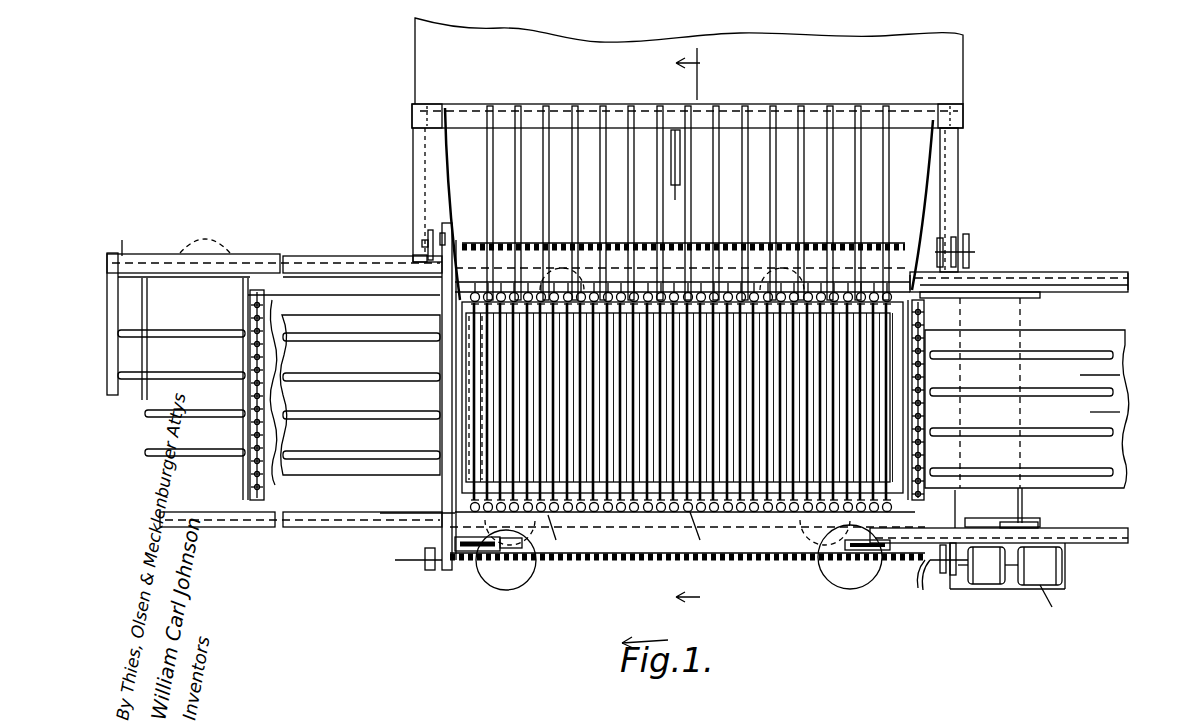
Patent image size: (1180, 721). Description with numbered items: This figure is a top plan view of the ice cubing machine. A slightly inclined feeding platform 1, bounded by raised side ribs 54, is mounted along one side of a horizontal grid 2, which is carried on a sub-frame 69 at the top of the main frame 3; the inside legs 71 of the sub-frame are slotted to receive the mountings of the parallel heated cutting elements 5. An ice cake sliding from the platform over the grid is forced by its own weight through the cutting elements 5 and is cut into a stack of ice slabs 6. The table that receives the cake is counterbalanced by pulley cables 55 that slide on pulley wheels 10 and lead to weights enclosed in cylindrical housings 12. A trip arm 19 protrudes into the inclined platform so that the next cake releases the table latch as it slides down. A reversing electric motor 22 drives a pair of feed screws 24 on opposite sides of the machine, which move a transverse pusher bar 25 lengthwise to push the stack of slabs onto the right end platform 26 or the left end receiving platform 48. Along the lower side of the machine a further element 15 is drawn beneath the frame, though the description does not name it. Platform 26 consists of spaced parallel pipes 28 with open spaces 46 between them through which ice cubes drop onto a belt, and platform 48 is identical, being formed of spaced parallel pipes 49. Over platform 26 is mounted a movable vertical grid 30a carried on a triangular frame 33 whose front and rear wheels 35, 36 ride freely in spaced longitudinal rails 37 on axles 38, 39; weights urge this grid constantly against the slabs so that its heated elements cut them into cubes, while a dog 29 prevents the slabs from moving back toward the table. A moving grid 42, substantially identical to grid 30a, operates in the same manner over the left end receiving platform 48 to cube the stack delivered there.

The feeding platform 1 is at (905, 122).
The horizontal grid 2 is at (722, 400).
The main frame 3 is at (428, 240).
The heated cutting elements 5 is at (512, 512).
The ice slabs 6 is at (676, 67).
The pulley wheels 10 is at (510, 560).
The cylindrical housing 12 is at (508, 590).
The drive chain 15 is at (640, 560).
The trip arm 19 is at (676, 128).
The electric motor 22 is at (1062, 568).
The feed screws 24 is at (470, 243).
The pusher bar 25 is at (442, 570).
The right end platform 26 is at (1128, 322).
The parallel pipes 28 is at (1090, 354).
The dog 29 is at (452, 160).
The vertical grid 30a is at (925, 318).
The triangular frame 33 is at (995, 253).
The front wheels 35 is at (982, 600).
The rear wheels 36 is at (1048, 527).
The longitudinal rails 37 is at (1070, 538).
The axle 38 is at (945, 509).
The axle 39 is at (147, 300).
The moving grid 42 is at (262, 438).
The open spaces 46 is at (1090, 378).
The left end receiving platform 48 is at (297, 314).
The spaced parallel pipes 49 is at (372, 333).
The raised side ribs 54 is at (518, 115).
The pulley cables 55 is at (475, 552).
The sub-frame 69 is at (700, 534).
The inside legs 71 is at (560, 532).